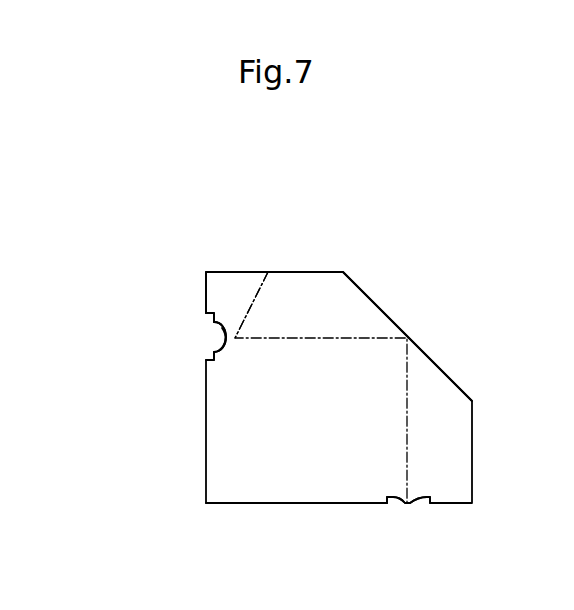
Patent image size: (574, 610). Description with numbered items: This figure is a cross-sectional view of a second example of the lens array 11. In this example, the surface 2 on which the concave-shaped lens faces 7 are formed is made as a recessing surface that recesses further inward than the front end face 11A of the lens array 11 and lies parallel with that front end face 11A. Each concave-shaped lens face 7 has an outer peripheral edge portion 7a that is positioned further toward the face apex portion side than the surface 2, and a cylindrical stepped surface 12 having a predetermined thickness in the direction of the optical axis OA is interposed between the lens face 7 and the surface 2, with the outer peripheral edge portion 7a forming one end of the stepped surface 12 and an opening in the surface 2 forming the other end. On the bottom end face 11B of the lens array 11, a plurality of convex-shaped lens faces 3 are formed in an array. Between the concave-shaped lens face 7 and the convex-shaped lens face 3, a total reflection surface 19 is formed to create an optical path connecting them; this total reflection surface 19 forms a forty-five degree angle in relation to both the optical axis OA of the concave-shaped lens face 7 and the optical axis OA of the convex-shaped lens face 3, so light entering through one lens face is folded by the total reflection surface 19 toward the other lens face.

The lens array 11 is at (172, 218).
The front end face 11A is at (206, 311).
The surface 2 is at (213, 321).
The outer peripheral edge portion 7a is at (225, 336).
The lens face 7 is at (222, 344).
The stepped surface 12 is at (212, 351).
The total reflection surface 19 is at (390, 317).
The bottom end face 11B is at (365, 505).
The convex-shaped lens face 3 is at (412, 504).
The optical axis OA is at (270, 268).